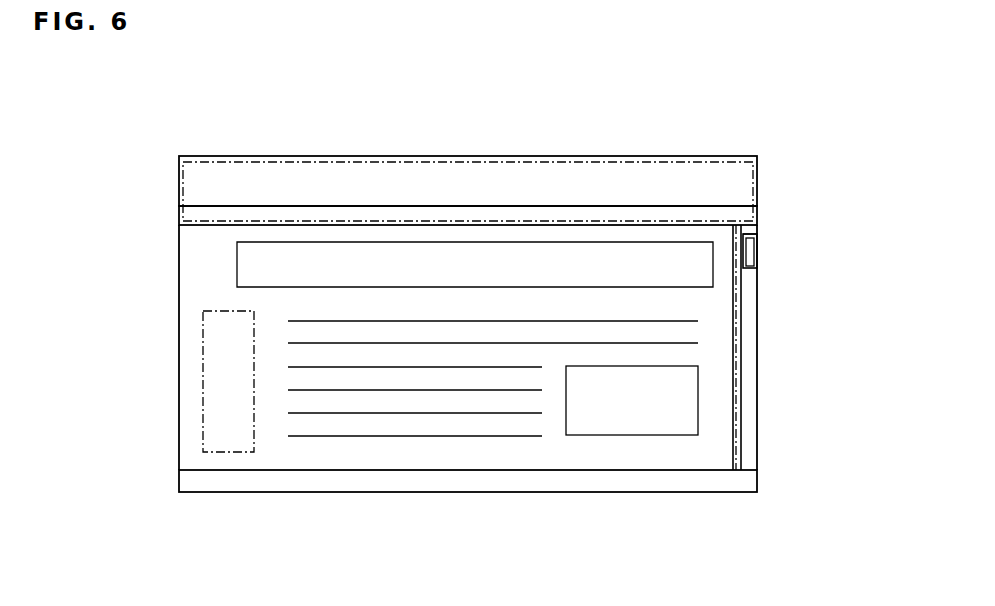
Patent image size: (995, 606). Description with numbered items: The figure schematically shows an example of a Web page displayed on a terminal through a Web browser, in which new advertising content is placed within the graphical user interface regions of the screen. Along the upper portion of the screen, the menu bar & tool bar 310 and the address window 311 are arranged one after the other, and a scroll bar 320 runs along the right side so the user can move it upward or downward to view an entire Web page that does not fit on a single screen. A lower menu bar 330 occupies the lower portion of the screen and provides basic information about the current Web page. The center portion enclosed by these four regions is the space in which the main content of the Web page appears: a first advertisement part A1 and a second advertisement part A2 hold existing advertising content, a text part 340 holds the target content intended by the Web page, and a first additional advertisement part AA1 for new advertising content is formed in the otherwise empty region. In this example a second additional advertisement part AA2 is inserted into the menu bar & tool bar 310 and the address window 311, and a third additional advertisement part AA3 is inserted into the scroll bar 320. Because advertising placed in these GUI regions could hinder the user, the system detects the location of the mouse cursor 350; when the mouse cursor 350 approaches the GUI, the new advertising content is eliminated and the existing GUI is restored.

The menu bar & tool bar 310 is at (200, 183).
The address window 311 is at (182, 215).
The scroll bar 320 is at (752, 333).
The lower menu bar 330 is at (582, 480).
The text part 340 is at (435, 436).
The mouse cursor 350 is at (437, 298).
The first additional advertisement part AA1 is at (228, 381).
The second additional advertisement part AA2 is at (312, 162).
The third additional advertisement part AA3 is at (757, 258).
The first advertisement part A1 is at (466, 265).
The second advertisement part A2 is at (632, 400).